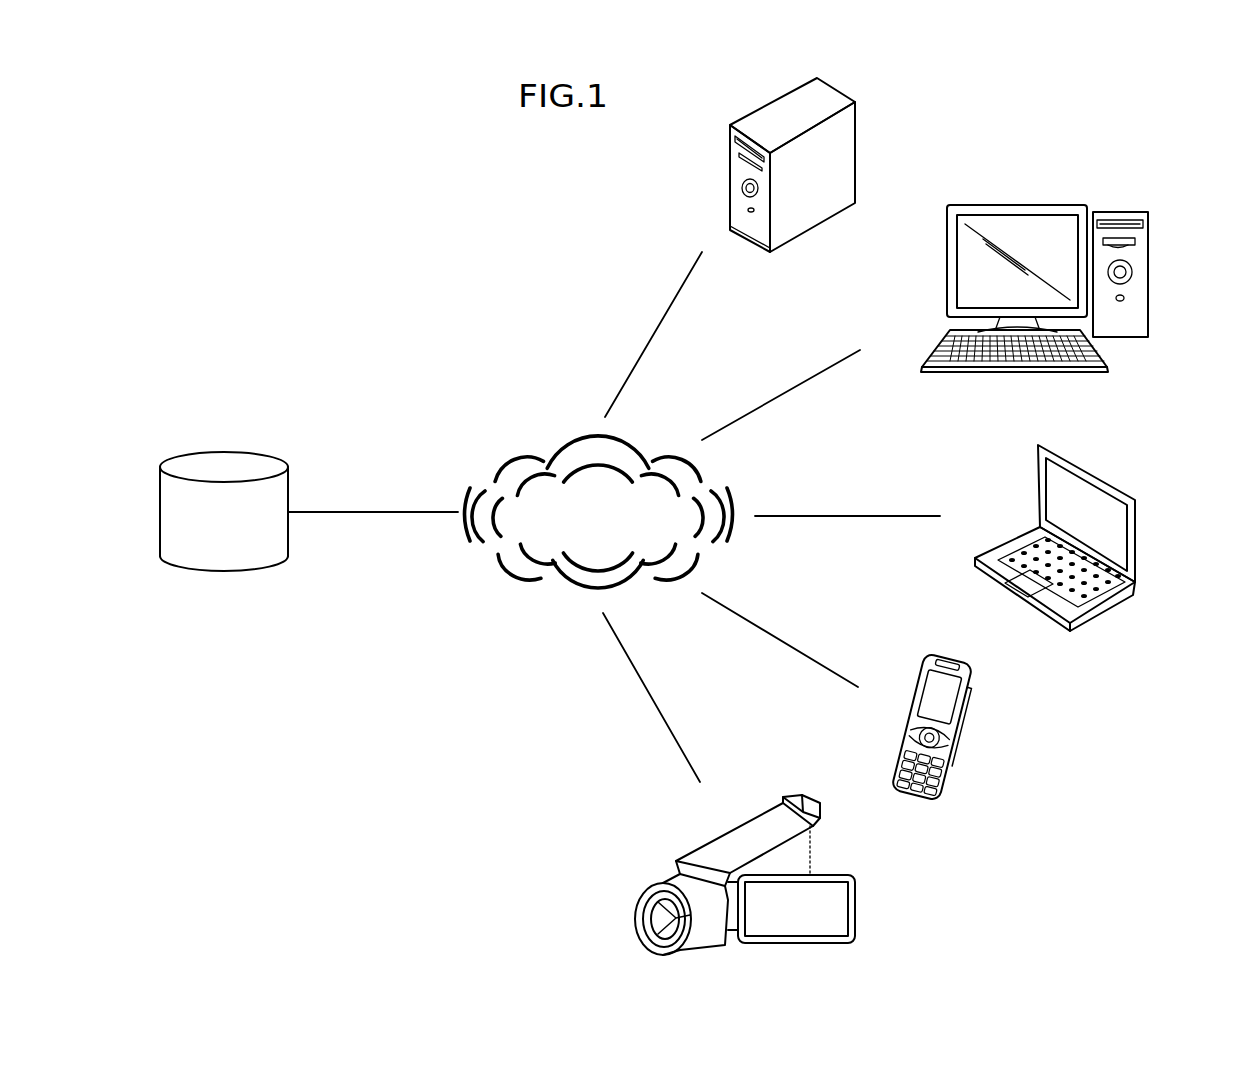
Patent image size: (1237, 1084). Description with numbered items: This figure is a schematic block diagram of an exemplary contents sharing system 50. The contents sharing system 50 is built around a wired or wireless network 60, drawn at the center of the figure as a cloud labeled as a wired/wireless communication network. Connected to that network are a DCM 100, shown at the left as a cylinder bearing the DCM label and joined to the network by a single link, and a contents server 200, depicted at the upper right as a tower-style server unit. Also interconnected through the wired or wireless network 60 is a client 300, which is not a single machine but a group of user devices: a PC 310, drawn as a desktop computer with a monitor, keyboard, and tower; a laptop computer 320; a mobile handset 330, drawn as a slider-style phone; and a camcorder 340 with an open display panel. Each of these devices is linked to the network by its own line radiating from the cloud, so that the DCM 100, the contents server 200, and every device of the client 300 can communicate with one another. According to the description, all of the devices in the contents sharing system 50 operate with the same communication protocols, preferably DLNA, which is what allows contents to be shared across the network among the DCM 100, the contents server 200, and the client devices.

The contents sharing system 50 is at (343, 238).
The wired or wireless network 60 is at (516, 443).
The DCM 100 is at (196, 451).
The contents server 200 is at (855, 130).
The client 300 is at (1064, 237).
The PC 310 is at (1062, 205).
The laptop computer 320 is at (1135, 528).
The mobile handset 330 is at (967, 718).
The camcorder 340 is at (855, 910).